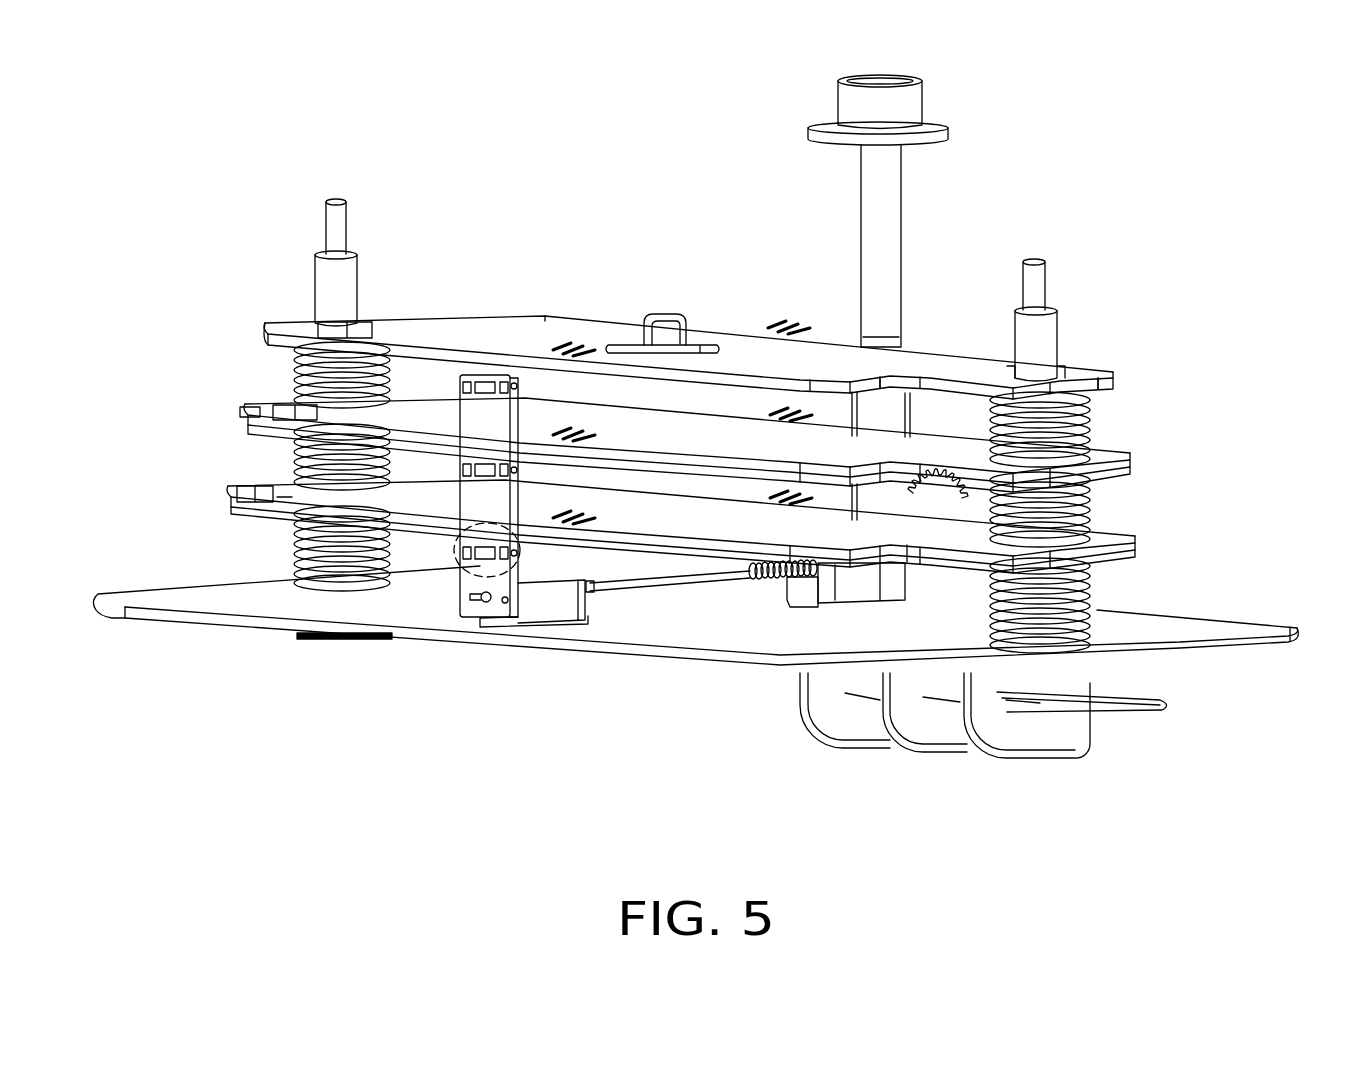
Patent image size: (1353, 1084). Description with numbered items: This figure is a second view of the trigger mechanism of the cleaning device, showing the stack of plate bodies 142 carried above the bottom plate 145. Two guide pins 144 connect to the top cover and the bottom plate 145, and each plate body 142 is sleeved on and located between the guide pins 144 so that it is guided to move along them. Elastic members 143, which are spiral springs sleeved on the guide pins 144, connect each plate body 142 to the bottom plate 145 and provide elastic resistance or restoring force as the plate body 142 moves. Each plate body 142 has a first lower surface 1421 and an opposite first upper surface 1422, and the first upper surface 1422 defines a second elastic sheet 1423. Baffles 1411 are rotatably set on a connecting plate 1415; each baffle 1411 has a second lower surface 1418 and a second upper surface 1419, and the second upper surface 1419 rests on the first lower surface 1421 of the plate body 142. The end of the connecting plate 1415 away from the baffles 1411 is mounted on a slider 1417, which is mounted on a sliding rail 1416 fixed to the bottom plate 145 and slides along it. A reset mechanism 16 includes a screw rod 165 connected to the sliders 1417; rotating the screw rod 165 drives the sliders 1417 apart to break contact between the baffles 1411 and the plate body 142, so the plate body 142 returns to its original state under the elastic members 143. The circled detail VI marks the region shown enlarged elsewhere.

The reset mechanism 16 is at (940, 229).
The plate body 142 is at (732, 345).
The elastic member 143 is at (300, 380).
The guide pin 144 is at (333, 233).
The bottom plate 145 is at (210, 596).
The screw rod 165 is at (632, 584).
The baffle 1411 is at (530, 381).
The connecting plate 1415 is at (481, 607).
The sliding rail 1416 is at (578, 626).
The slider 1417 is at (547, 604).
The second lower surface 1418 is at (576, 386).
The second upper surface 1419 is at (513, 378).
The first lower surface 1421 is at (942, 400).
The first upper surface 1422 is at (933, 365).
The second elastic sheet 1423 is at (560, 347).
The detail view VI is at (462, 540).